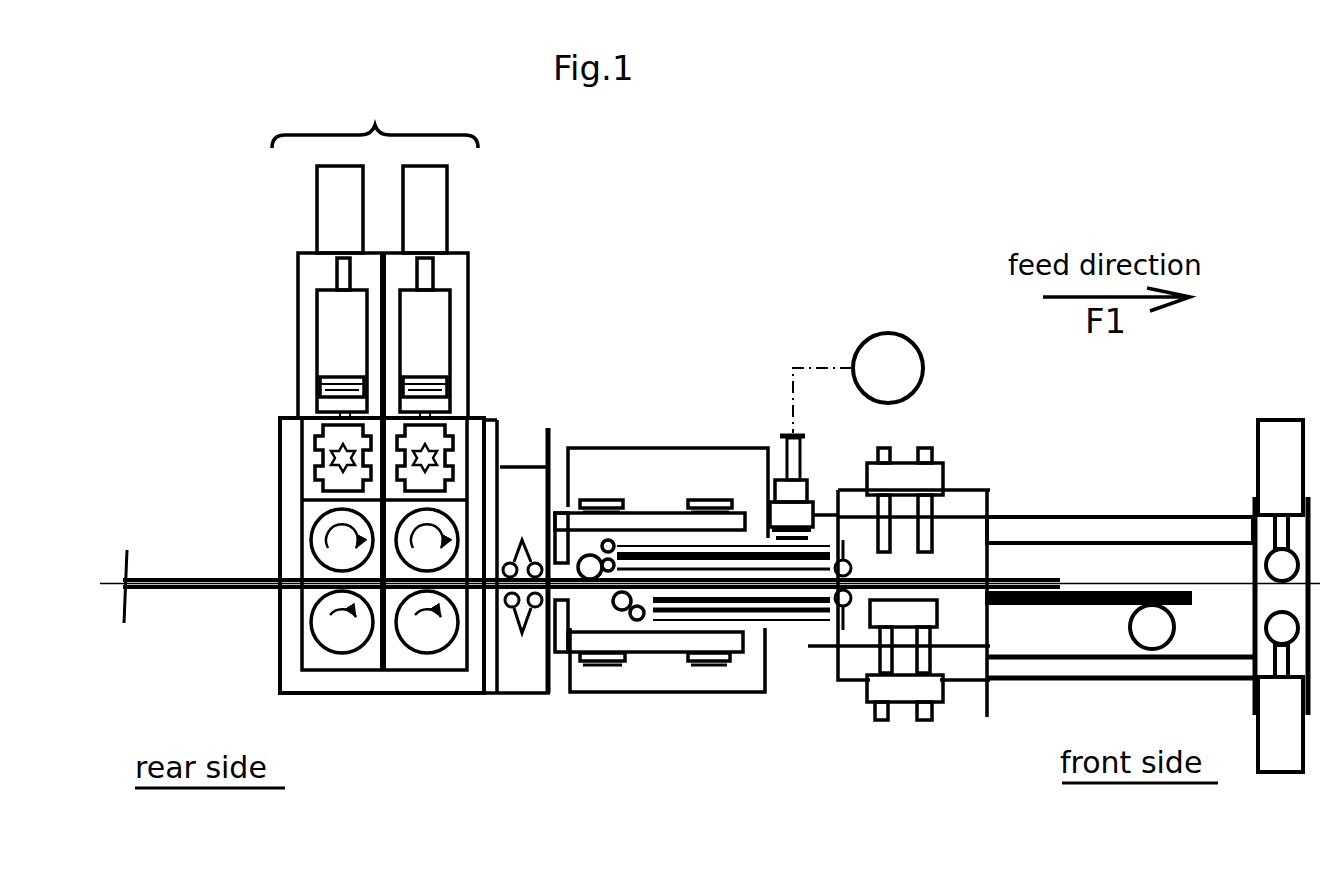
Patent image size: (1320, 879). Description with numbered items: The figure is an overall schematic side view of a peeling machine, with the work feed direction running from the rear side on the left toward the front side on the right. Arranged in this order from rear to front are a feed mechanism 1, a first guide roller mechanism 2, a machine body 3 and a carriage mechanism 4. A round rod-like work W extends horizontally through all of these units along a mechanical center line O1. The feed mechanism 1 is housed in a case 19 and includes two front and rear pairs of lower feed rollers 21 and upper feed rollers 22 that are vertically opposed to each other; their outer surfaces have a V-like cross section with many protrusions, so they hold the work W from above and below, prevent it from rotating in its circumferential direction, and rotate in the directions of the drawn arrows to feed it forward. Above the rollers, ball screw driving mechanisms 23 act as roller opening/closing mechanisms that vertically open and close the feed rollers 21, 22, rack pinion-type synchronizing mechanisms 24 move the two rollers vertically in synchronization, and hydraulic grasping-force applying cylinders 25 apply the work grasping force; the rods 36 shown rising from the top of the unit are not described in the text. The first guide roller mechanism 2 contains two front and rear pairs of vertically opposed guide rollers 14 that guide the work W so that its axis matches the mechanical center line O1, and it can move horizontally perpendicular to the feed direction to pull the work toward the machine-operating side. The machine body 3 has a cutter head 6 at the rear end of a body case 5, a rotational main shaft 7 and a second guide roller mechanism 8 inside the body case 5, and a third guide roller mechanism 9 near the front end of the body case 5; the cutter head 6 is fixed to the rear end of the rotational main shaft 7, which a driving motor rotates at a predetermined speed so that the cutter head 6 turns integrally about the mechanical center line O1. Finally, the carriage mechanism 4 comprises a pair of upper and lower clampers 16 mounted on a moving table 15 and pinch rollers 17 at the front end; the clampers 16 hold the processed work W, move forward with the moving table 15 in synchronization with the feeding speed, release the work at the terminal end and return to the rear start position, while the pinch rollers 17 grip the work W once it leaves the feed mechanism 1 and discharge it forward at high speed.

The feed mechanism 1 is at (388, 120).
The first guide roller mechanism 2 is at (550, 445).
The machine body 3 is at (686, 533).
The carriage mechanism 4 is at (907, 552).
The body case 5 is at (710, 445).
The cutter head 6 is at (560, 650).
The rotational main shaft 7 is at (660, 637).
The second guide roller mechanism 8 is at (607, 614).
The third guide roller mechanism 9 is at (838, 604).
The guide rollers 14 is at (522, 586).
The moving table 15 is at (958, 628).
The clampers 16 is at (910, 618).
The pinch rollers 17 is at (1280, 625).
The case 19 is at (297, 493).
The lower feed rollers 21 is at (435, 628).
The upper feed rollers 22 is at (415, 548).
The ball screw driving mechanisms 23 is at (330, 345).
The rack pinion-type synchronizing mechanisms 24 is at (335, 462).
The hydraulic grasping-force applying cylinders 25 is at (335, 395).
The cylinder rod 36 is at (350, 225).
The work W is at (172, 592).
The mechanical center line O1 is at (220, 593).